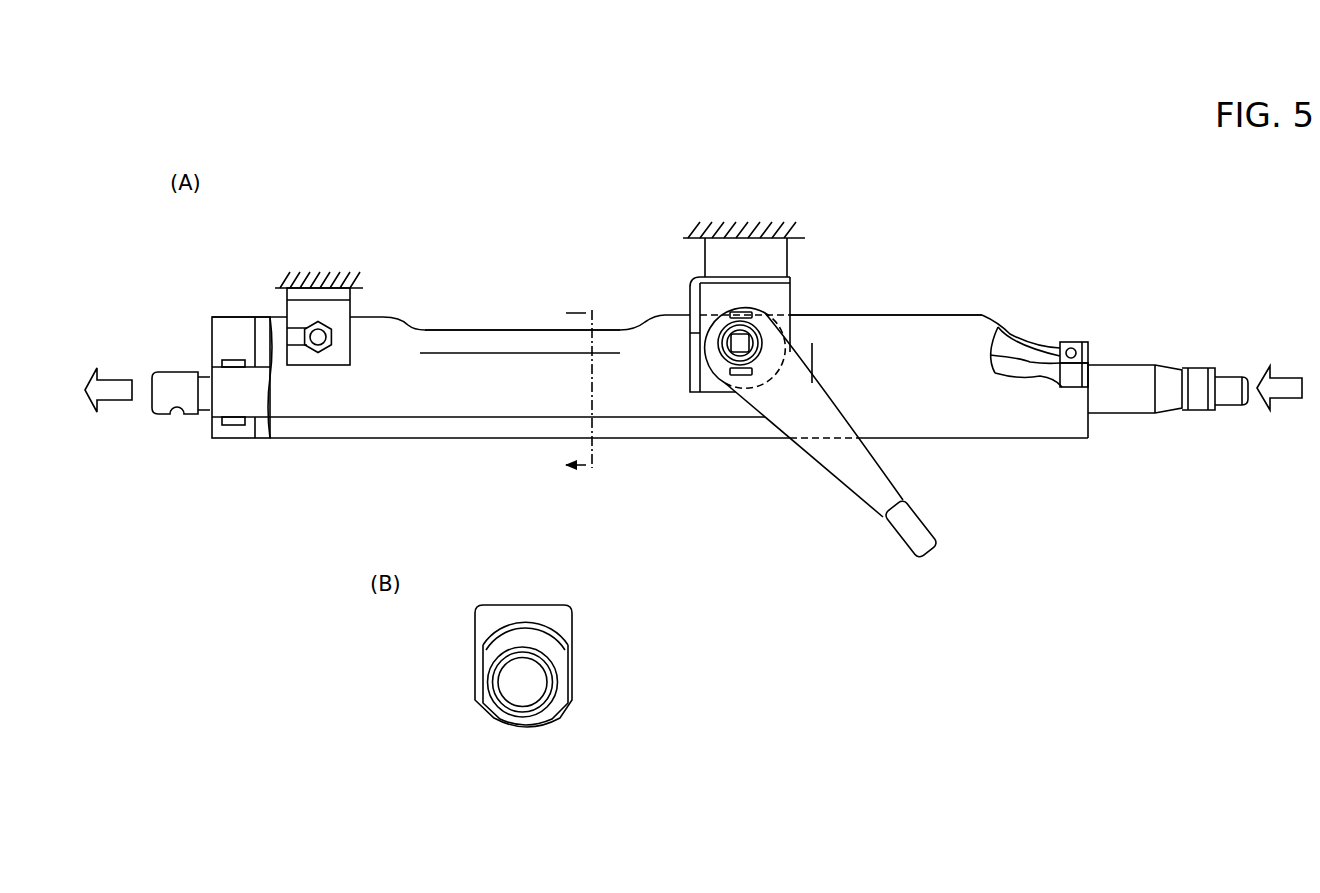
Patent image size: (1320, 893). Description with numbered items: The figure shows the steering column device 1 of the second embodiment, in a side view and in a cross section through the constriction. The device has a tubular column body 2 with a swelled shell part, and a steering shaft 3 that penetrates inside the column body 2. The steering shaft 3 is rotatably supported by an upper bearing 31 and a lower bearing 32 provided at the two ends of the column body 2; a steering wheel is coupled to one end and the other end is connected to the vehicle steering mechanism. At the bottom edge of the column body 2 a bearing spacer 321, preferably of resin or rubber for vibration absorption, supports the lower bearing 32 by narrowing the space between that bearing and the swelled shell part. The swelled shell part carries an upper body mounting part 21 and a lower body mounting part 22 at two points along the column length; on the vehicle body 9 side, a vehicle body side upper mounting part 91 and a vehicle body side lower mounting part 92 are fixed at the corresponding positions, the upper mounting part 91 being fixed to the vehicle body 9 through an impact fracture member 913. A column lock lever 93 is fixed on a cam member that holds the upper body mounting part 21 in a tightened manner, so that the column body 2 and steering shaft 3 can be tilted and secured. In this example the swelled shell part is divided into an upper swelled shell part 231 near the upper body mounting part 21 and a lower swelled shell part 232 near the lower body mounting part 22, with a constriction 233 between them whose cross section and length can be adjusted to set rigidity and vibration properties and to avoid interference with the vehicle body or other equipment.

The steering column device 1 is at (555, 138).
The column body 2 is at (620, 427).
The steering shaft 3 is at (1123, 405).
The vehicle body 9 is at (307, 270).
The upper body mounting part 21 is at (773, 356).
The lower body mounting part 22 is at (331, 361).
The upper bearing 31 is at (1088, 352).
The lower bearing 32 is at (213, 333).
The vehicle body side upper mounting part 91 is at (800, 294).
The vehicle body side lower mounting part 92 is at (360, 305).
The column lock lever 93 is at (863, 497).
The upper swelled shell part 231 is at (902, 318).
The lower swelled shell part 232 is at (278, 315).
The constriction 233 is at (452, 320).
The bearing spacer 321 is at (225, 357).
The impact fracture member 913 is at (718, 257).